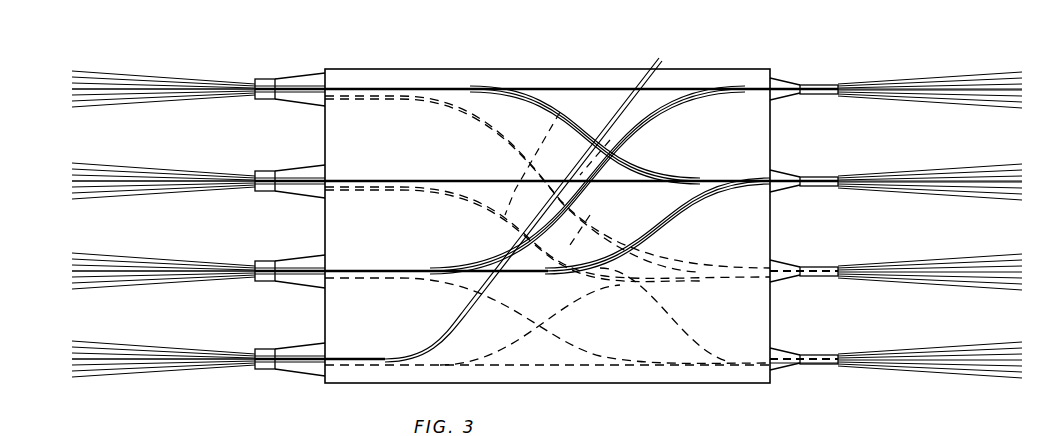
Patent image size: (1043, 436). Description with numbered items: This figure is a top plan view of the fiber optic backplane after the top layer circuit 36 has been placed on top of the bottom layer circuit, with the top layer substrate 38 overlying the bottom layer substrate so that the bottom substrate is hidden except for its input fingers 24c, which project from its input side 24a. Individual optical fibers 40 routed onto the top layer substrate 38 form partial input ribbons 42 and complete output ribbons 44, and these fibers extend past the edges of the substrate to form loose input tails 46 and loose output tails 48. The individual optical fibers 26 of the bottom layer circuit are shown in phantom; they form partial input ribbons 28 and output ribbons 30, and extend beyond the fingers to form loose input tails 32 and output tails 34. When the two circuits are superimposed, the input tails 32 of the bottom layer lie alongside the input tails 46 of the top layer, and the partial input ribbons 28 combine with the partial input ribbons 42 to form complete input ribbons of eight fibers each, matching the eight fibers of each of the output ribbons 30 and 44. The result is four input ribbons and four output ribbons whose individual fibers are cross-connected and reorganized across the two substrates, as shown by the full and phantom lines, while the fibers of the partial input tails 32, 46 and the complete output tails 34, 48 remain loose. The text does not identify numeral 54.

The input side 24a is at (322, 222).
The input fingers 24c is at (275, 106).
The individual optical fibers 26 is at (685, 270).
The fiber optic input ribbons 28 is at (352, 100).
The fiber optic output ribbons 30 is at (800, 284).
The input tails 32 is at (152, 108).
The output tails 34 is at (965, 352).
The top layer circuit 36 is at (648, 386).
The top layer substrate 38 is at (728, 375).
The individual optical fibers 40 is at (648, 213).
The input ribbons 42 is at (366, 86).
The output ribbons 44 is at (790, 102).
The input tails 46 is at (158, 72).
The output tails 48 is at (965, 178).
The element 54 is at (1020, 425).